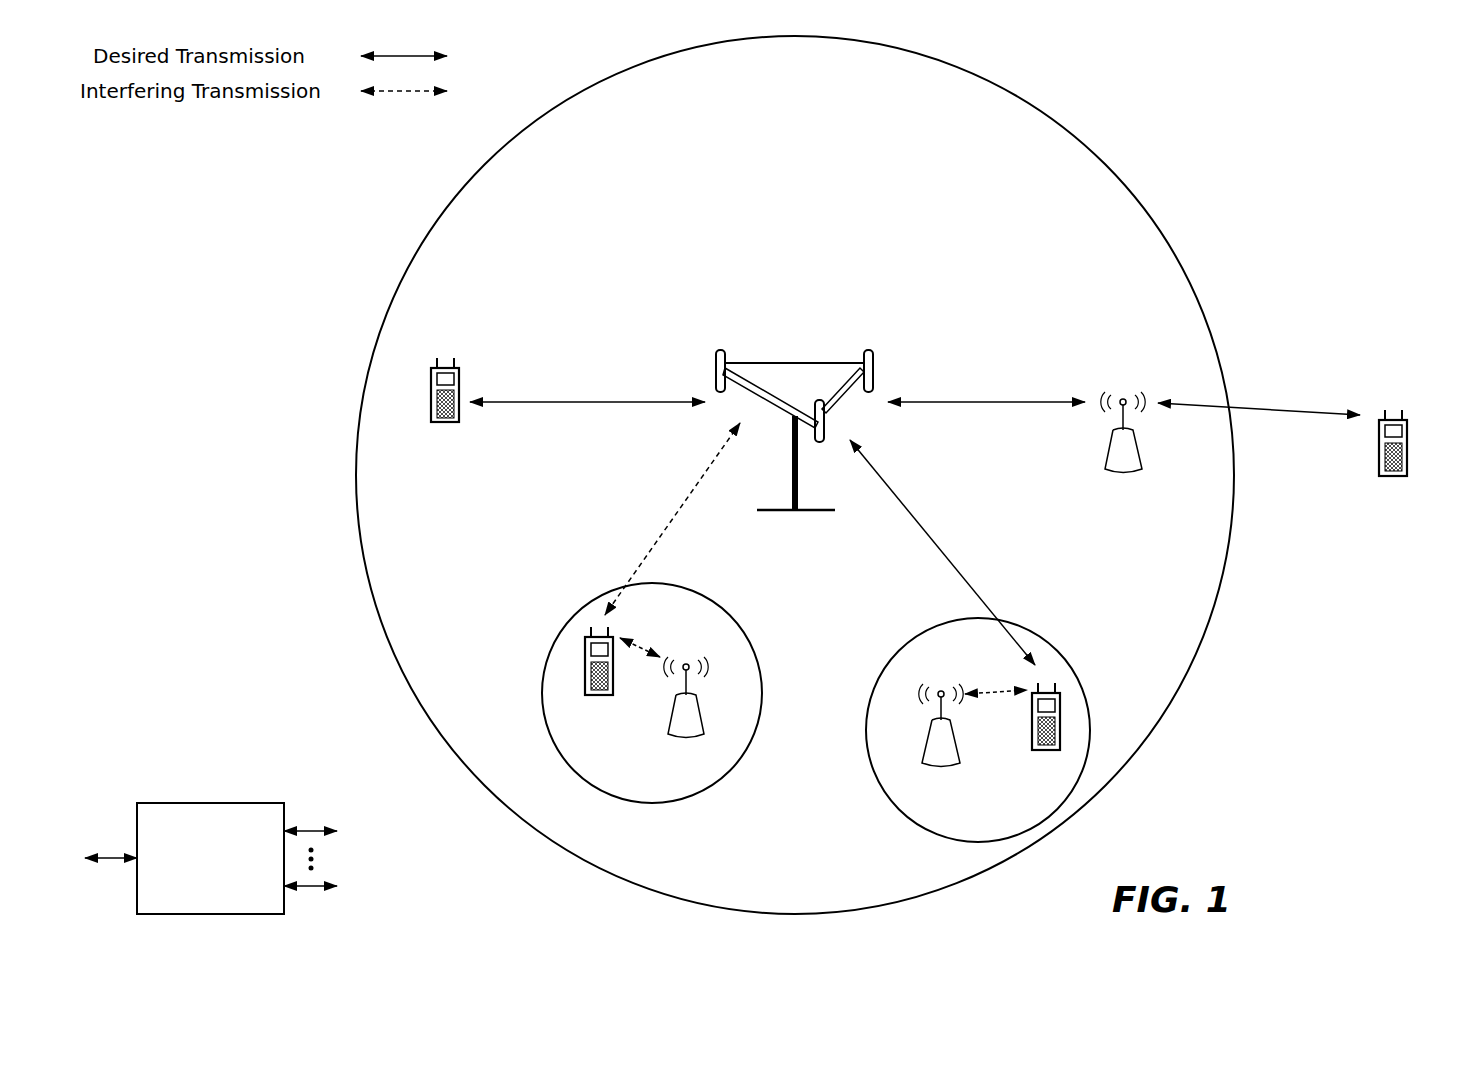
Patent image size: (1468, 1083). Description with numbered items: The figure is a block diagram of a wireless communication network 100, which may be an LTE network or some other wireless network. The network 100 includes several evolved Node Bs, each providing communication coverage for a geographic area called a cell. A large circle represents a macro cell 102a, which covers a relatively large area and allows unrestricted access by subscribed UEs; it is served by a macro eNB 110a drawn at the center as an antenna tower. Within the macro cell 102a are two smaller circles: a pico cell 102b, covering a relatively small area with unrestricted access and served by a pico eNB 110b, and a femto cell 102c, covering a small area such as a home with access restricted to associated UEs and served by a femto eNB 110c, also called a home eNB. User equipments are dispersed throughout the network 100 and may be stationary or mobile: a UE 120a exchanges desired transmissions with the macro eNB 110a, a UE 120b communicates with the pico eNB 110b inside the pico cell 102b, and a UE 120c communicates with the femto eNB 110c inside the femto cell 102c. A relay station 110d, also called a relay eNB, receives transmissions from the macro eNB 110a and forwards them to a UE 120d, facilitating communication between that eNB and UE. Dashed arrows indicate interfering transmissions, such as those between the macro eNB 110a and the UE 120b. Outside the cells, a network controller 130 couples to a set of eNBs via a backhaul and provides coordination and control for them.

The wireless communication network 100 is at (1312, 106).
The macro cell 102a is at (1084, 143).
The pico cell 102b is at (734, 619).
The femto cell 102c is at (896, 659).
The macro eNB 110a is at (788, 366).
The pico eNB 110b is at (700, 724).
The femto eNB 110c is at (922, 752).
The relay station 110d is at (1123, 399).
The UE 120a is at (429, 375).
The UE 120b is at (585, 688).
The UE 120c is at (1032, 742).
The UE 120d is at (1409, 430).
The network controller 130 is at (208, 803).